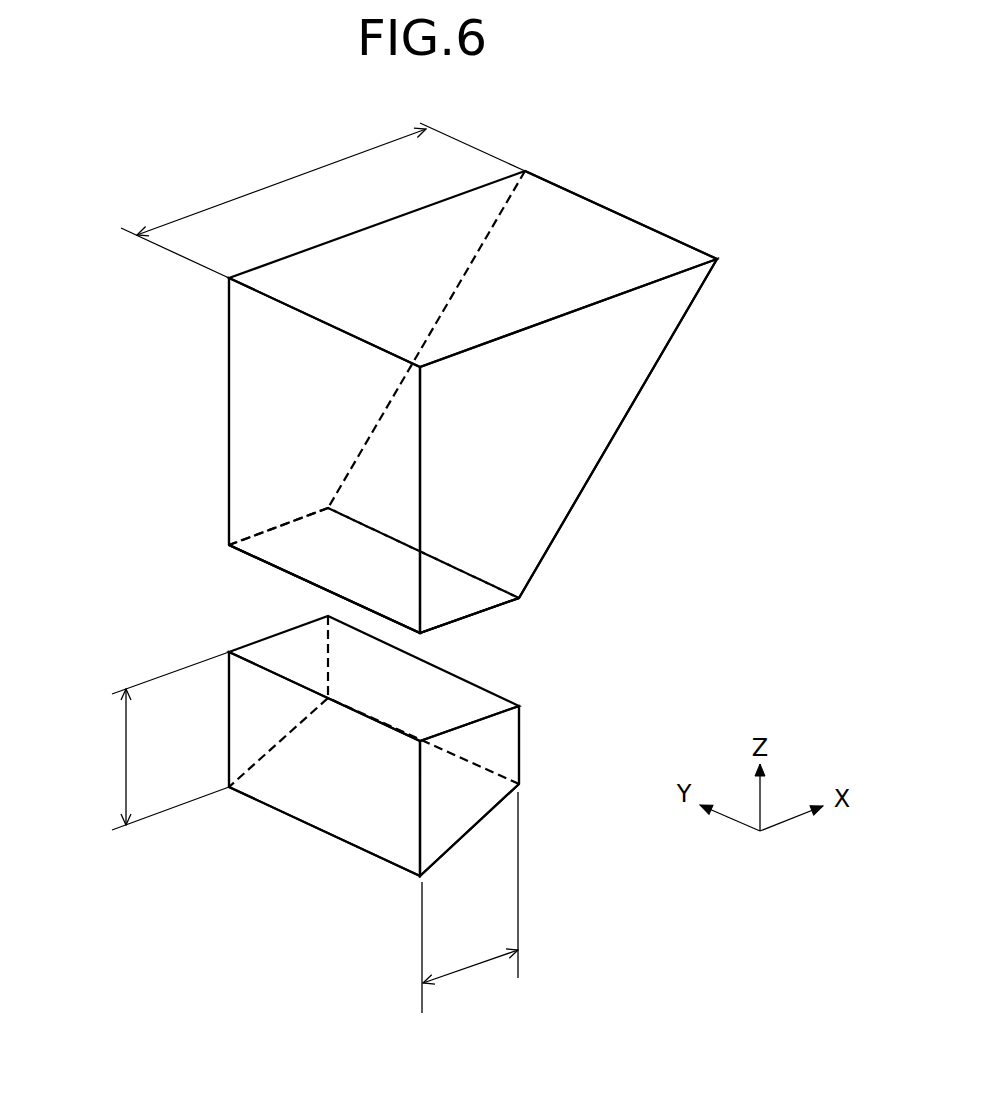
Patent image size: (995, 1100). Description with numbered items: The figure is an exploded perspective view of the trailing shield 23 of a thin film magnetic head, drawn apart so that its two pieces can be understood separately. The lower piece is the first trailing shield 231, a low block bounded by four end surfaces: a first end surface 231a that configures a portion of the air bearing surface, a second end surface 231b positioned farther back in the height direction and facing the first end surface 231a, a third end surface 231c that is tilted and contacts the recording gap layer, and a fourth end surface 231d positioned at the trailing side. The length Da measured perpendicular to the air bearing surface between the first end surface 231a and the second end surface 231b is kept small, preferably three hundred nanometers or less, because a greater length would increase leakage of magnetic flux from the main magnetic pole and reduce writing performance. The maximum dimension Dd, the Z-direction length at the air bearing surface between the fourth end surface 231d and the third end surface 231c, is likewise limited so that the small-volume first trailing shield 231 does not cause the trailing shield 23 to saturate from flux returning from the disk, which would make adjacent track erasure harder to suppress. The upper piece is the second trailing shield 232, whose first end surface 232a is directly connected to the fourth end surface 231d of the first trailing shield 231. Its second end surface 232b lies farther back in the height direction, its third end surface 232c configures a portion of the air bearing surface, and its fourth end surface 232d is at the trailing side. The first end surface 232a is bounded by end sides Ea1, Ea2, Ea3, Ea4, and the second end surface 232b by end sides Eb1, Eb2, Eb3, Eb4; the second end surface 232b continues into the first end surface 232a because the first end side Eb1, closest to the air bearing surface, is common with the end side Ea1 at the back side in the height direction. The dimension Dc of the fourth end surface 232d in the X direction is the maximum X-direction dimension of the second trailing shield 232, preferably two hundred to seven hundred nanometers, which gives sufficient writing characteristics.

The trailing shield 23 is at (783, 282).
The first trailing shield 231 is at (228, 715).
The first end surface 231a is at (333, 780).
The second end surface 231b is at (498, 744).
The third end surface (tilted end surface) 231c is at (445, 818).
The fourth end surface (trailing side end surface) 231d is at (447, 703).
The second trailing shield 232 is at (227, 412).
The first end surface 232a is at (298, 550).
The second end surface 232b is at (553, 462).
The third end surface 232c is at (267, 467).
The fourth end surface 232d is at (338, 270).
The end side Ea1 is at (505, 568).
The first end side Eb1 is at (423, 553).
The end side Ea2 is at (323, 588).
The end side Ea3 is at (472, 618).
The end side Ea4 is at (273, 527).
The end side Eb2 is at (642, 217).
The end side Eb3 is at (648, 383).
The end side Eb4 is at (487, 235).
The dimension Dc is at (323, 200).
The maximum dimension Dd is at (154, 741).
The length Da is at (470, 902).